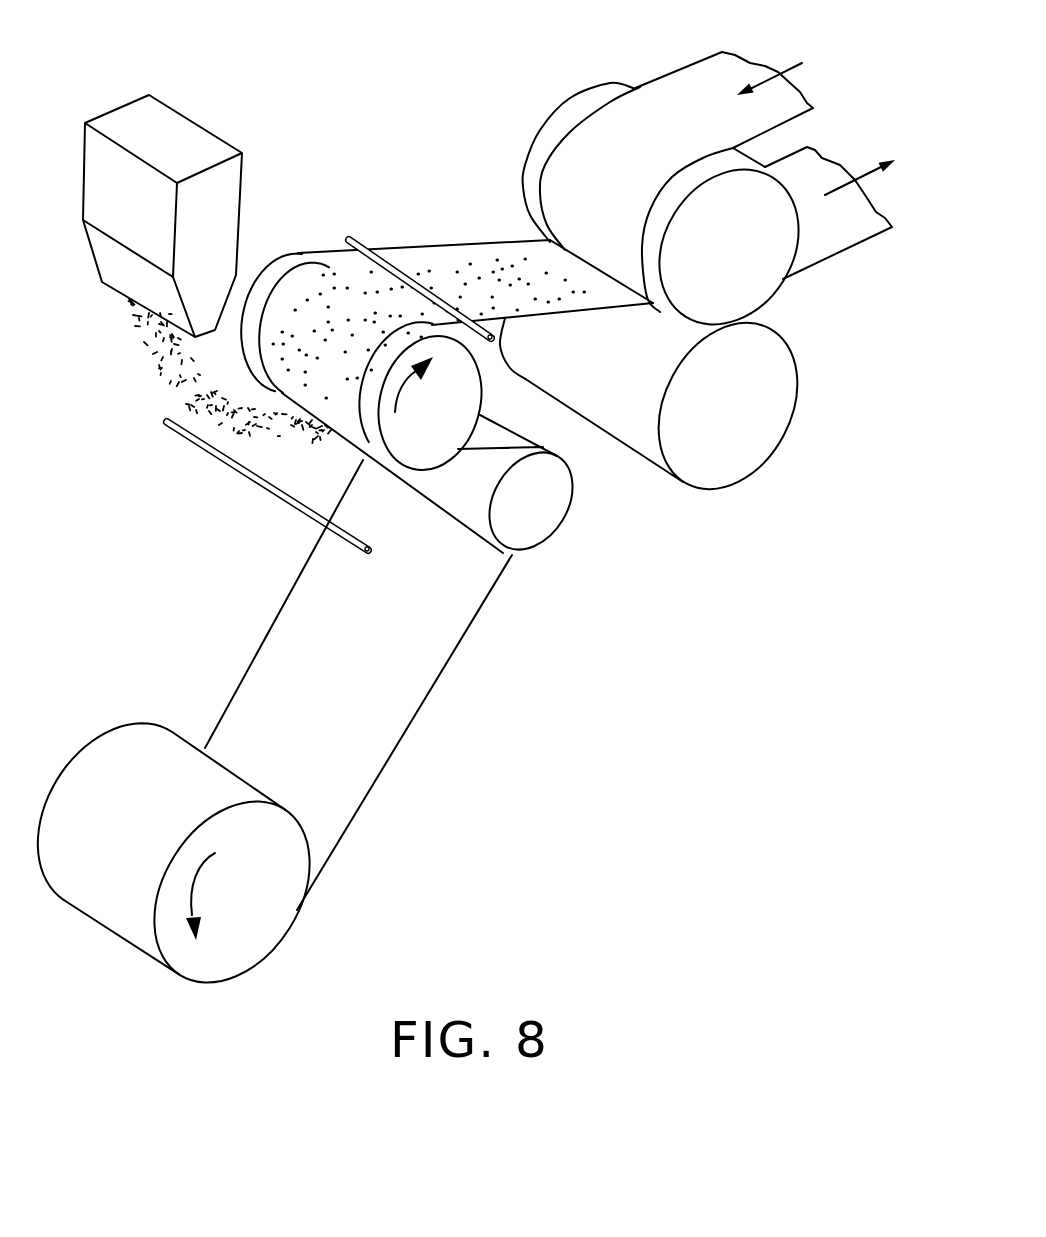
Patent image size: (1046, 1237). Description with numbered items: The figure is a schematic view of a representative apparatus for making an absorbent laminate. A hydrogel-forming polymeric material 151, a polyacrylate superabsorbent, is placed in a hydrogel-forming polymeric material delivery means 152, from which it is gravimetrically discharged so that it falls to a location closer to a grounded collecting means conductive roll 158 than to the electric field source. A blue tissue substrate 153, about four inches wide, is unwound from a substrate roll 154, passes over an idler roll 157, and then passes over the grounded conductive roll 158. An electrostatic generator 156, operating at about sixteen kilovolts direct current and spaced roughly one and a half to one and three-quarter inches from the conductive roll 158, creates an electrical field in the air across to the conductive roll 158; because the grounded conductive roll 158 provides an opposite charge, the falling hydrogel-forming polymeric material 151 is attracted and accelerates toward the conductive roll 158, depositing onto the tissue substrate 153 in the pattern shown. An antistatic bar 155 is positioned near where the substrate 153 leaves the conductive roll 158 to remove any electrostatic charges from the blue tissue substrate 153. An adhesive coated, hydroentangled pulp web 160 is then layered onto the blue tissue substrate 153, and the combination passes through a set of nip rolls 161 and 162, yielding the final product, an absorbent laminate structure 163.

The hydrogel-forming polymeric material 151 is at (136, 374).
The hydrogel-forming polymeric material delivery means 152 is at (208, 132).
The blue tissue substrate 153 is at (333, 815).
The substrate roll 154 is at (280, 908).
The antistatic bar 155 is at (368, 242).
The electrostatic generator 156 is at (202, 445).
The idler roll 157 is at (546, 521).
The collecting means conductive roll 158 is at (281, 270).
The adhesive coated, hydroentangled pulp web 160 is at (670, 93).
The nip roll 161 is at (561, 121).
The nip roll 162 is at (750, 443).
The absorbent laminate structure 163 is at (827, 240).